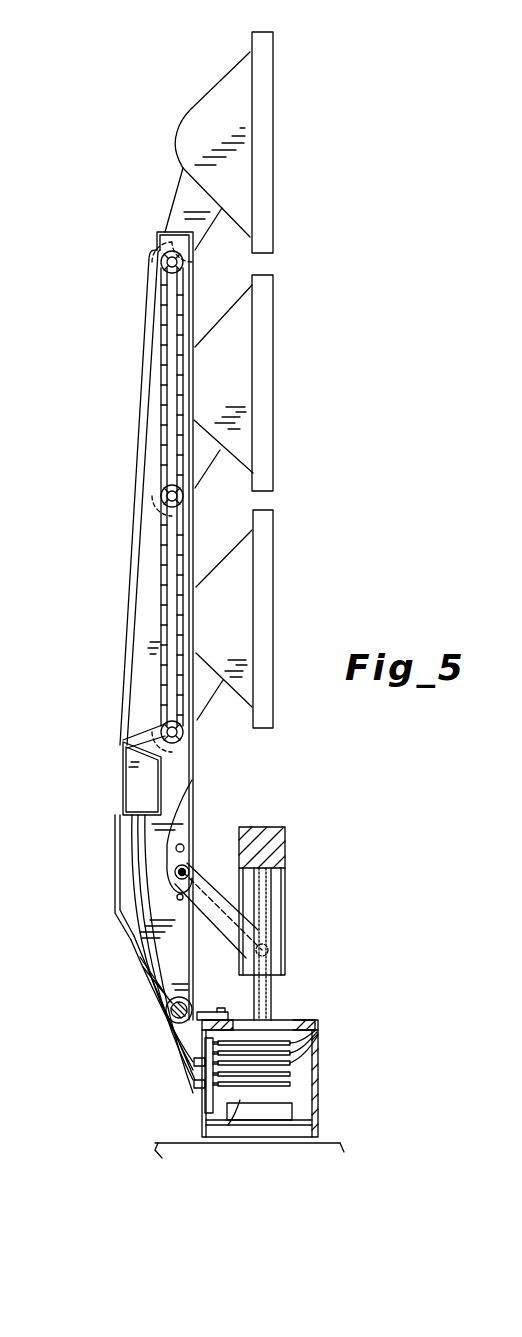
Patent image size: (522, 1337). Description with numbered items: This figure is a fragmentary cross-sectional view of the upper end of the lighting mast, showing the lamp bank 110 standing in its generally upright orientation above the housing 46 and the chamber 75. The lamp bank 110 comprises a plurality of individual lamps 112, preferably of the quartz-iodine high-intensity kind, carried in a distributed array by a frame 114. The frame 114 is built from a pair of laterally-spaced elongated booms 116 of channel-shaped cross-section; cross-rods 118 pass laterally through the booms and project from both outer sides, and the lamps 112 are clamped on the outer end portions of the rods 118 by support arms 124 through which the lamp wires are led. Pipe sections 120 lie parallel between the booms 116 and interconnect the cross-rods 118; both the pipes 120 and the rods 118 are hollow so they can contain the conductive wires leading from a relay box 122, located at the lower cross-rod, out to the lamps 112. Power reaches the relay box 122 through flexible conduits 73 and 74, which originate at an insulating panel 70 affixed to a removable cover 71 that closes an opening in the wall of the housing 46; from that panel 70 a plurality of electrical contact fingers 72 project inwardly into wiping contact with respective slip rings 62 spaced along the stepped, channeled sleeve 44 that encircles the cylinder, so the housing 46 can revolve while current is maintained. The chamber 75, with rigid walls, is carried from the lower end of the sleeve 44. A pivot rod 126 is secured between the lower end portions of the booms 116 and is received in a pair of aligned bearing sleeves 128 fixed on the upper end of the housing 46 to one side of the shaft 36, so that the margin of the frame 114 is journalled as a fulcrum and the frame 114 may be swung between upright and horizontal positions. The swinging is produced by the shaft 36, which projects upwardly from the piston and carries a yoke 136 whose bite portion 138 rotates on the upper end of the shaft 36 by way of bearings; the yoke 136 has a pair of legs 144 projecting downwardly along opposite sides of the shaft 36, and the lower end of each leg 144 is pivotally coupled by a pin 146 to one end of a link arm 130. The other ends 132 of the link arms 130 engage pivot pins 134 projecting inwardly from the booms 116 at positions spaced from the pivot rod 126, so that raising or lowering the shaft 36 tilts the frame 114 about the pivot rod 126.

The lamp bank 110 is at (307, 416).
The lamps 112 is at (263, 190).
The frame 114 is at (134, 598).
The booms 116 is at (132, 716).
The cross-rods 118 is at (162, 258).
The pipe sections 120 is at (163, 330).
The relay box 122 is at (130, 772).
The support arms 124 is at (182, 193).
The pivot rod 126 is at (190, 1008).
The bearing sleeves 128 is at (167, 992).
The link arms 130 is at (234, 892).
The ends of link arms 132 is at (187, 794).
The pivot pins 134 is at (190, 860).
The yoke 136 is at (288, 840).
The bite portion 138 is at (280, 826).
The legs 144 is at (278, 890).
The pin 146 is at (262, 942).
The shaft 36 is at (269, 995).
The sleeve 44 is at (288, 1118).
The housing 46 is at (319, 1084).
The slip rings 62 is at (300, 1054).
The panel 70 is at (207, 1092).
The removable cover 71 is at (210, 1108).
The electrical contact fingers 72 is at (214, 1077).
The flexible conduit 73 is at (142, 983).
The flexible conduit 74 is at (136, 1022).
The chamber 75 is at (331, 1150).